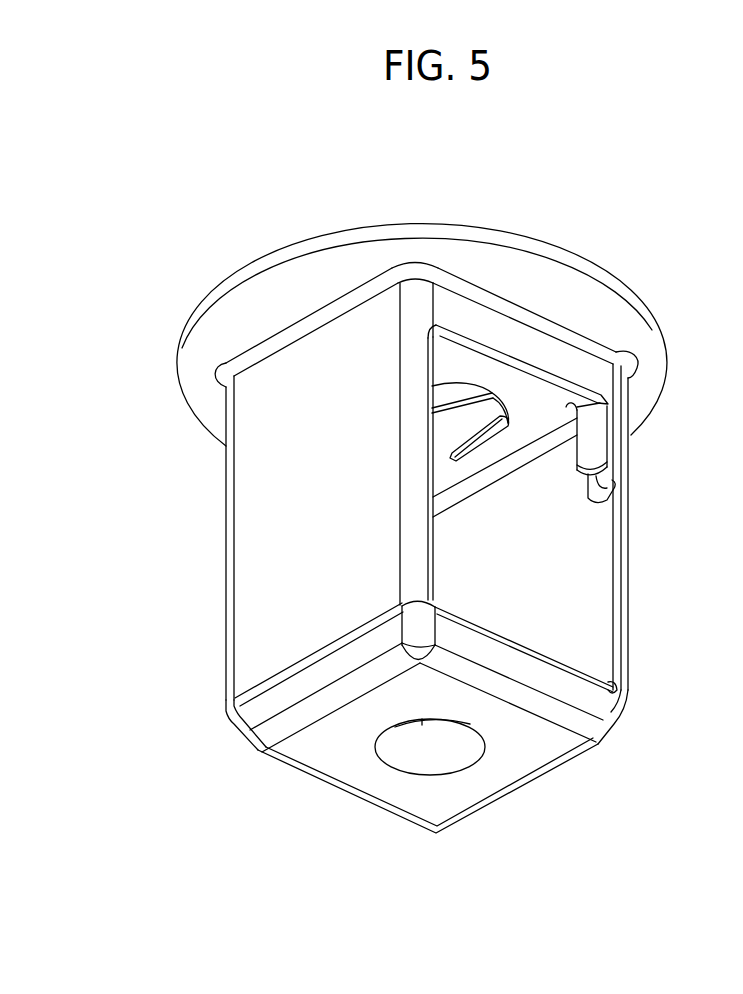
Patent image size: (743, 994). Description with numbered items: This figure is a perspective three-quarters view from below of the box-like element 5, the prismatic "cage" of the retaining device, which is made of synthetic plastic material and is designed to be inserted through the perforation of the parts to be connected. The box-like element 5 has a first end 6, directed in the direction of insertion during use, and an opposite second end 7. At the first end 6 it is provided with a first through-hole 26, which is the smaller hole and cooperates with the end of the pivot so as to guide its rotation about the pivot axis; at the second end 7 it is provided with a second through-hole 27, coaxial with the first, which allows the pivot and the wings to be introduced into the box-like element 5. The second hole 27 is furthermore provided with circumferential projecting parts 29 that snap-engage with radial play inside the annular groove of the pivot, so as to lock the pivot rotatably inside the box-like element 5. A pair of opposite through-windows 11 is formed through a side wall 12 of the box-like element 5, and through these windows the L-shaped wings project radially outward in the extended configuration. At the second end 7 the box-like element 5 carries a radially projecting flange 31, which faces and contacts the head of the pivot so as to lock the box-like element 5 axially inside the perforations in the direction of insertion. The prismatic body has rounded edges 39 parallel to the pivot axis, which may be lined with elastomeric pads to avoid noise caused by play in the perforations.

The box-like element 5 is at (160, 528).
The first end 6 is at (428, 765).
The second end 7 is at (433, 311).
The through-window 11 is at (566, 654).
The side wall 12 is at (257, 641).
The first through-hole 26 is at (407, 755).
The second through-hole 27 is at (441, 452).
The circumferential projecting parts 29 is at (475, 362).
The radially projecting flange 31 is at (603, 308).
The rounded edges 39 is at (228, 477).